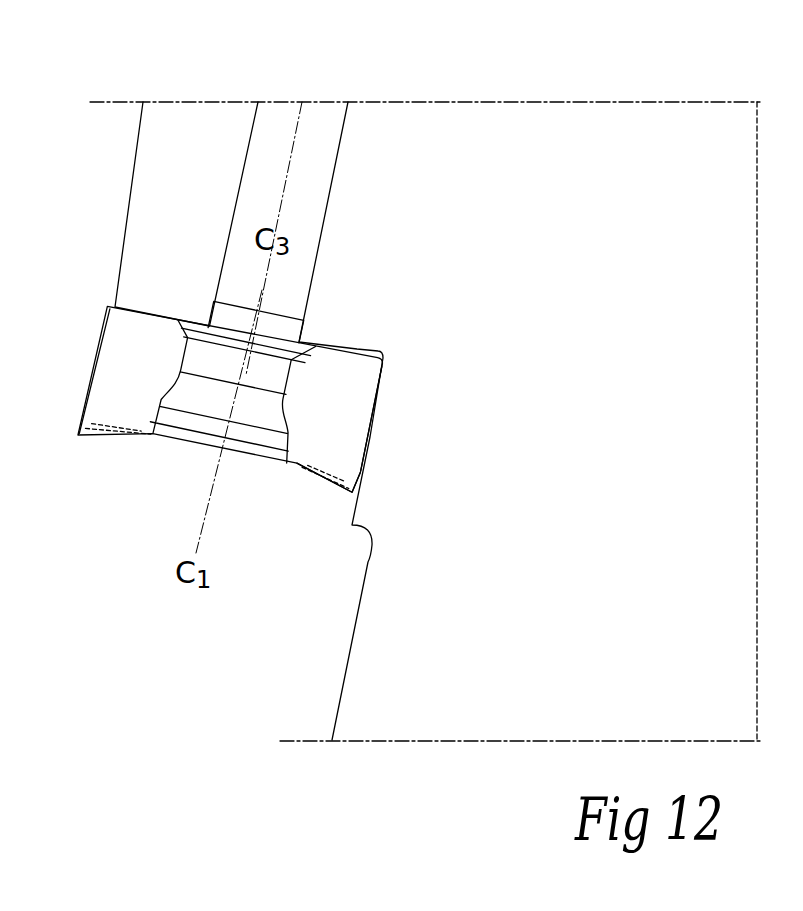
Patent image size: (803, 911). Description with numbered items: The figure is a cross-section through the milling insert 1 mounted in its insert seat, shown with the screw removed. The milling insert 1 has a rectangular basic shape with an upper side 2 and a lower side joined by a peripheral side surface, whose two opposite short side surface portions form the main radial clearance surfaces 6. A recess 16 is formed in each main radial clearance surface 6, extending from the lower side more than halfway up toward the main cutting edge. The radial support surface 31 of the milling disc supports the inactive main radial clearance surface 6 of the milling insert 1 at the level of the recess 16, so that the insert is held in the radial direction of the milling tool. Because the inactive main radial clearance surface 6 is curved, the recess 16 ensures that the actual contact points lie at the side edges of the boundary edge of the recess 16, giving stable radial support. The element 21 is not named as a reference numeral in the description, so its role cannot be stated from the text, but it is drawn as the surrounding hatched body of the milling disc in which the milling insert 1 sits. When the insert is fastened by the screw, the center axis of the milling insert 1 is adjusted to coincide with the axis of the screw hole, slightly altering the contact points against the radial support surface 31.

The tool body / holder 21 is at (517, 125).
The milling insert 1 is at (117, 367).
The upper side 2 is at (125, 438).
The recess 16 is at (102, 328).
The main radial clearance surface 6 is at (80, 420).
The radial support surface 31 is at (368, 430).